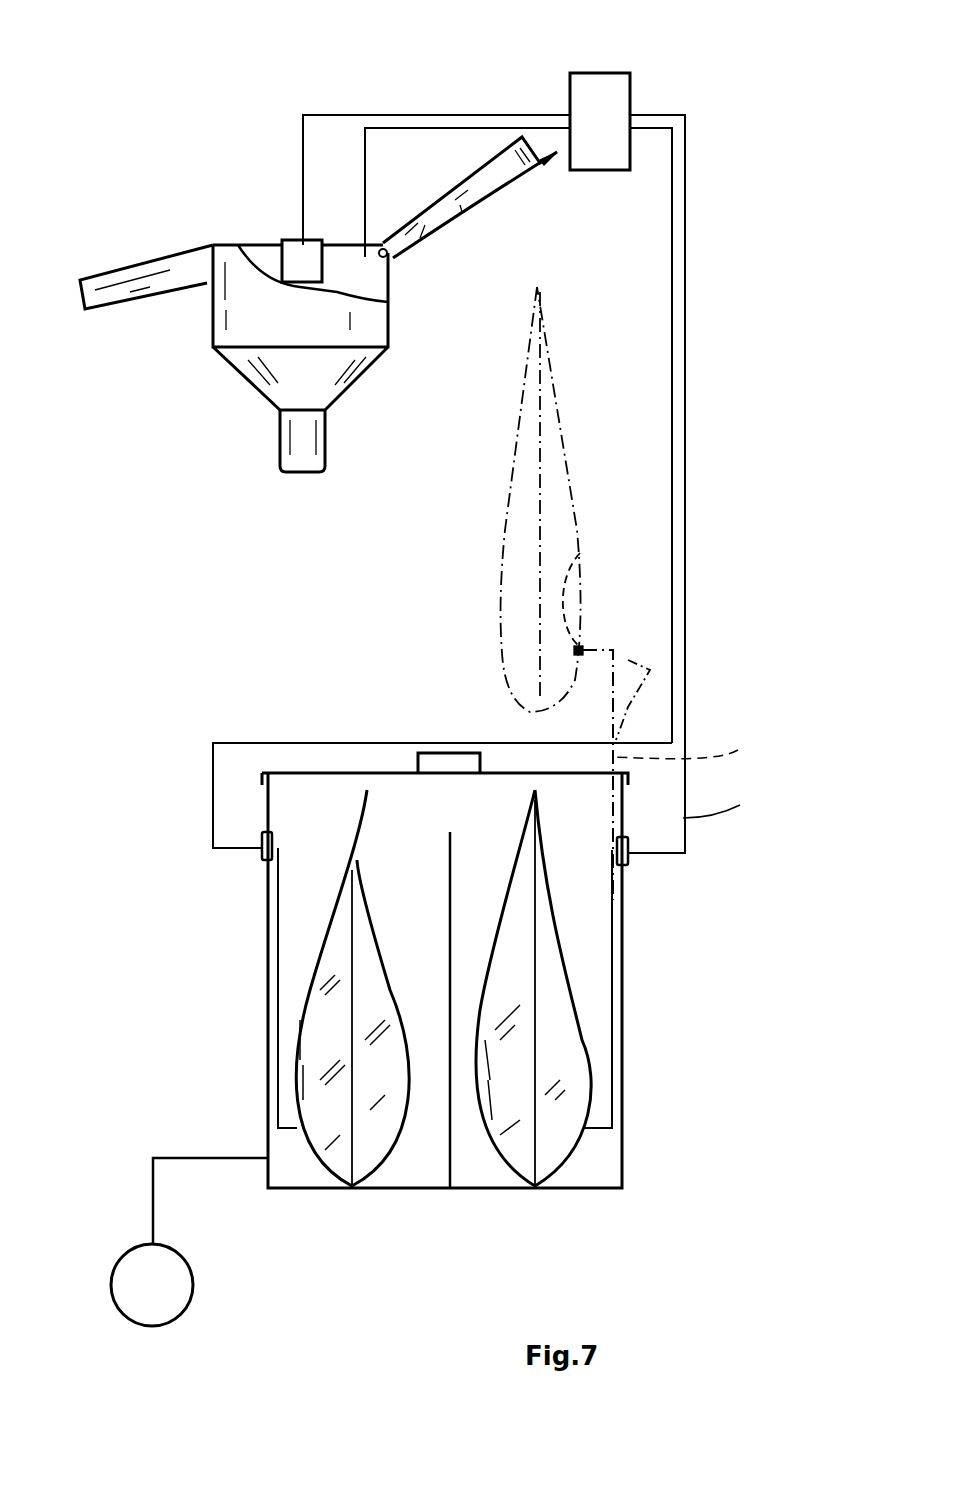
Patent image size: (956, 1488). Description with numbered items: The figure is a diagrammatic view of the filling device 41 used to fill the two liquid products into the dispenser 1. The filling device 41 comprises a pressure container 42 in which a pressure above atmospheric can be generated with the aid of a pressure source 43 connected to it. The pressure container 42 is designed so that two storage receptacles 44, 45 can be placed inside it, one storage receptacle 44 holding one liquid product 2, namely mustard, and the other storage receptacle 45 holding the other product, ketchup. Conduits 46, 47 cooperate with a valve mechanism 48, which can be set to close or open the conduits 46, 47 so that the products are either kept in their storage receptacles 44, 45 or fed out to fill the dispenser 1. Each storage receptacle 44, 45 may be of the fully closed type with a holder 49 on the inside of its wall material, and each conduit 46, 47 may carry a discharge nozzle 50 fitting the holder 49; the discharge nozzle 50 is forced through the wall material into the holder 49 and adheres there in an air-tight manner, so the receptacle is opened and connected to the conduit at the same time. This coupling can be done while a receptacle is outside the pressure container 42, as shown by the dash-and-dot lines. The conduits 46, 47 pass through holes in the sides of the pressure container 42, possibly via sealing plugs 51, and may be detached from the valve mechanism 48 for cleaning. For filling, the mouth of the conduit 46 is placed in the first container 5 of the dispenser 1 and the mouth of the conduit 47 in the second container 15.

The dispenser 1 is at (166, 384).
The liquid product 2 is at (565, 1050).
The first container 5 is at (375, 283).
The second container 15 is at (293, 255).
The filling device 41 is at (700, 610).
The pressure container 42 is at (268, 955).
The pressure source 43 is at (113, 1272).
The storage receptacle 44 is at (502, 540).
The storage receptacle 45 is at (305, 1000).
The conduit 46 is at (685, 769).
The conduit 47 is at (213, 808).
The valve mechanism 48 is at (645, 63).
The holder 49 is at (580, 555).
The discharge nozzle 50 is at (584, 648).
The sealing plug 51 is at (262, 858).